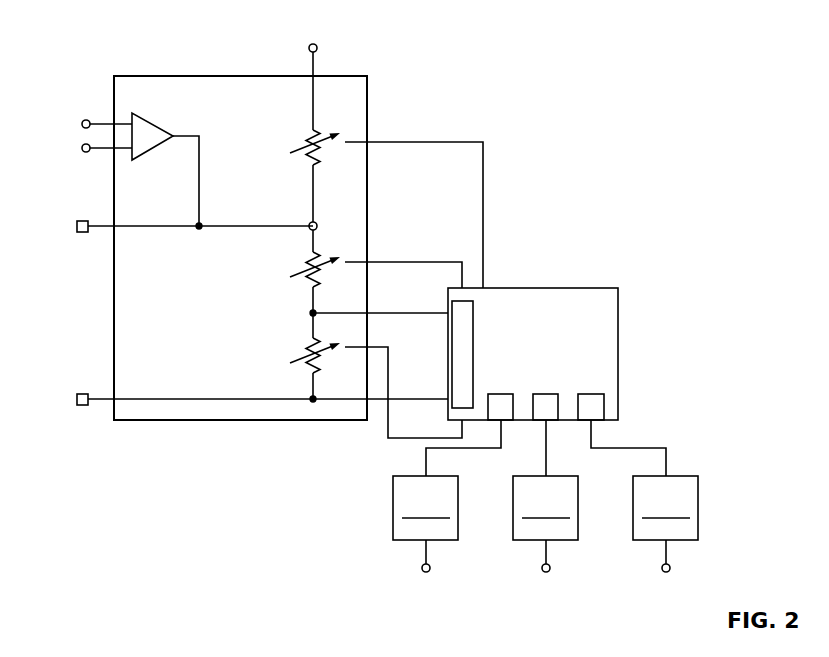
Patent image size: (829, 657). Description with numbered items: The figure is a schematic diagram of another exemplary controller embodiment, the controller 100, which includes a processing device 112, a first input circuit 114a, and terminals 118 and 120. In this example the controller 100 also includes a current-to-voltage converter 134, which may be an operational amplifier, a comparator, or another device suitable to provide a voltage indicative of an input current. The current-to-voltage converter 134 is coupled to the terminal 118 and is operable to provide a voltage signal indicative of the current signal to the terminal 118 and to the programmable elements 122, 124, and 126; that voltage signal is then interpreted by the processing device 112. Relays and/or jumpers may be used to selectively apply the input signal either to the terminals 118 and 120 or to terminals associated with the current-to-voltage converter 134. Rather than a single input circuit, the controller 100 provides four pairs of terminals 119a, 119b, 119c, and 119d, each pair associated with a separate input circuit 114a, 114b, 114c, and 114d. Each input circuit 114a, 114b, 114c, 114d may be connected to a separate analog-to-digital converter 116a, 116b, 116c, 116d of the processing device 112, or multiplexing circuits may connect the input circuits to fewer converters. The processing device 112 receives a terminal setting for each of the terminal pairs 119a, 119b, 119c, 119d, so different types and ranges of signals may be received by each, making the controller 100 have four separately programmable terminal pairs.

The controller 100 is at (540, 73).
The processing device 112 is at (562, 288).
The input circuit 114a is at (178, 75).
The input circuit 114b is at (425, 508).
The input circuit 114c is at (545, 508).
The input circuit 114d is at (665, 508).
The analog-to-digital converter 116a is at (465, 310).
The analog-to-digital converter 116b is at (502, 394).
The analog-to-digital converter 116c is at (547, 394).
The analog-to-digital converter 116d is at (592, 394).
The terminal 118 is at (80, 234).
The pair of terminals 119a is at (96, 339).
The pair of terminals 119b is at (424, 573).
The pair of terminals 119c is at (544, 573).
The pair of terminals 119d is at (664, 573).
The terminal 120 is at (82, 405).
The programmable element 122 is at (312, 131).
The programmable element 124 is at (312, 253).
The programmable element 126 is at (312, 339).
The current-to-voltage converter 134 is at (149, 116).